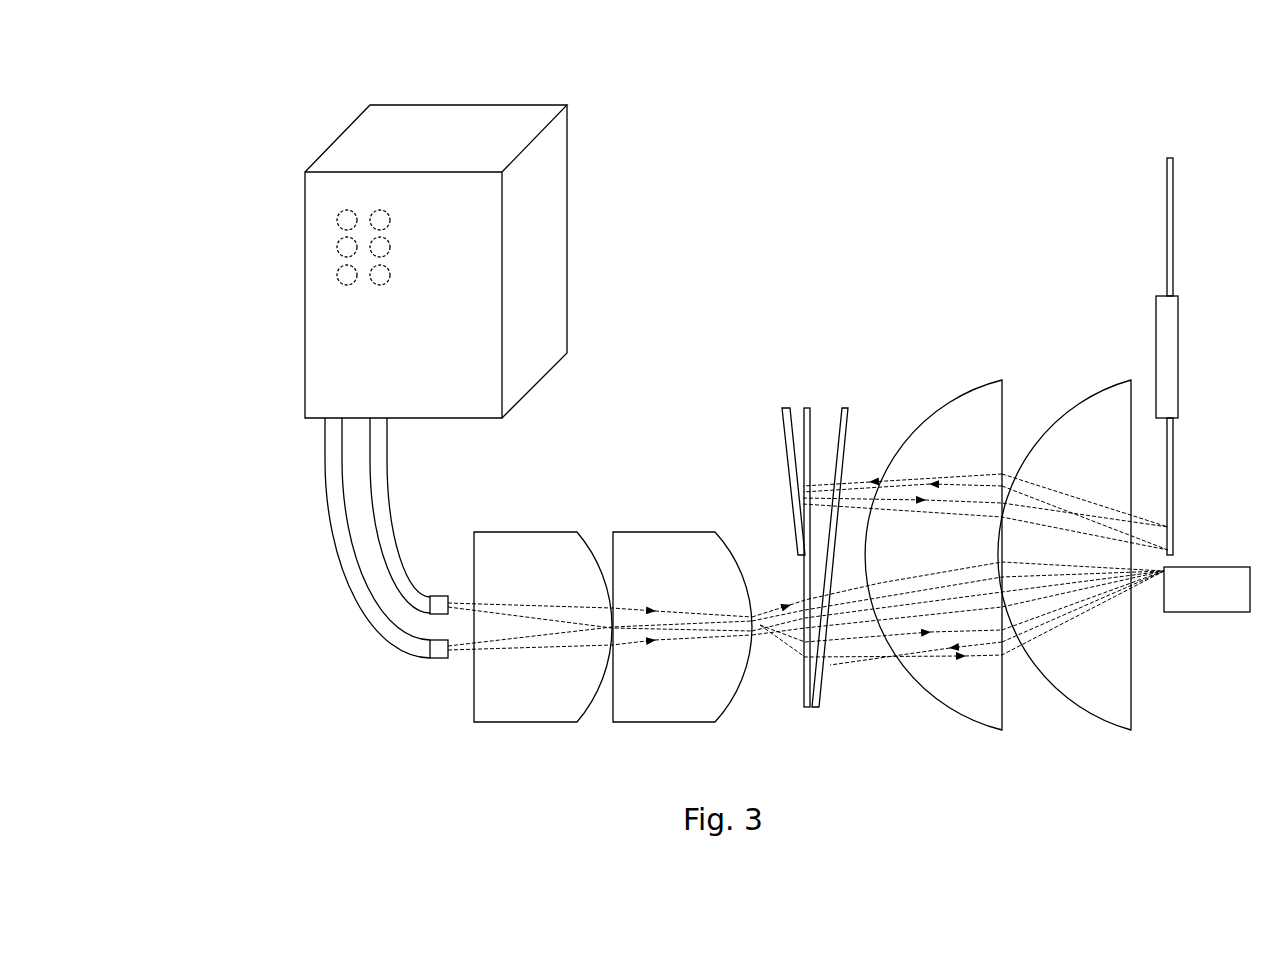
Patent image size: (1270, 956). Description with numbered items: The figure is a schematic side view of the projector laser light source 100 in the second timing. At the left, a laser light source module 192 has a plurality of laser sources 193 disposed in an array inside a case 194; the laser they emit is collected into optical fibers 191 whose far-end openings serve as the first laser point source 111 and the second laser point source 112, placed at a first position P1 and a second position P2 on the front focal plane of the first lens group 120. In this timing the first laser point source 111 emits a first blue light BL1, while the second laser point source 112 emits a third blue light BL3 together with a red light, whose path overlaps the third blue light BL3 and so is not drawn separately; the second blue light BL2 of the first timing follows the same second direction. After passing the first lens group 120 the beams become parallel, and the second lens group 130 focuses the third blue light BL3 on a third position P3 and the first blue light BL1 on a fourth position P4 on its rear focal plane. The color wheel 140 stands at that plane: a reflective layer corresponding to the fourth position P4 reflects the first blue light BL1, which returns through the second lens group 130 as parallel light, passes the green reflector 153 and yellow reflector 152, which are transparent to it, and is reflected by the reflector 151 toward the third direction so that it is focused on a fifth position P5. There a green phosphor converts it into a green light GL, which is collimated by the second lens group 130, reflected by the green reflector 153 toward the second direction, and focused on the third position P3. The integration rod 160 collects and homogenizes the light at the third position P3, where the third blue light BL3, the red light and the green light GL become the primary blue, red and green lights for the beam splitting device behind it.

The projector laser light source 100 is at (928, 142).
The laser light source module 192 is at (225, 133).
The case 194 is at (333, 158).
The laser sources 193 is at (342, 218).
The optical fibers 191 is at (333, 450).
The first laser point source 111 is at (432, 660).
The second laser point source 112 is at (430, 595).
The first lens group 120 is at (645, 737).
The reflector 151 is at (783, 403).
The yellow reflector 152 is at (807, 405).
The green reflector 153 is at (847, 410).
The second lens group 130 is at (1033, 372).
The color wheel 140 is at (1178, 341).
The integration rod 160 is at (1210, 612).
The first position P1 is at (450, 658).
The second position P2 is at (448, 598).
The third position P3 is at (1165, 572).
The fourth position P4 is at (1172, 527).
The fifth position P5 is at (1173, 550).
The first blue light BL1 is at (528, 650).
The second blue light BL2 is at (772, 640).
The third blue light BL3 is at (528, 600).
The green light GL is at (855, 607).